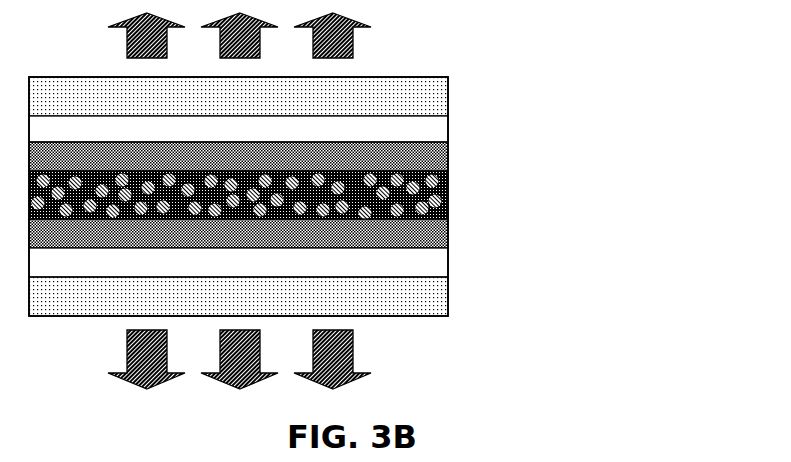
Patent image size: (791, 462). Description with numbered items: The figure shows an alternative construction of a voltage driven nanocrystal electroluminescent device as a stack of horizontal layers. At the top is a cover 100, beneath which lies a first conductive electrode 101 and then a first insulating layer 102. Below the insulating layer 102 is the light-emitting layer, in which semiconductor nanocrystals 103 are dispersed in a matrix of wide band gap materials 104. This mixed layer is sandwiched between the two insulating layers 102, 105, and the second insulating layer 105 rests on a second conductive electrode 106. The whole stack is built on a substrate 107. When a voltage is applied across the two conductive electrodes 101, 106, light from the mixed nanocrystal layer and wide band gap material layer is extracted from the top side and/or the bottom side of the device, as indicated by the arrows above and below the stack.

The cover 100 is at (289, 96).
The conductive electrode 101 is at (322, 129).
The insulating layer 102 is at (304, 156).
The semiconductor nanocrystals 103 is at (341, 197).
The wide band gap materials 104 is at (366, 196).
The insulating layer 105 is at (304, 234).
The conductive electrode 106 is at (339, 262).
The substrate 107 is at (305, 296).